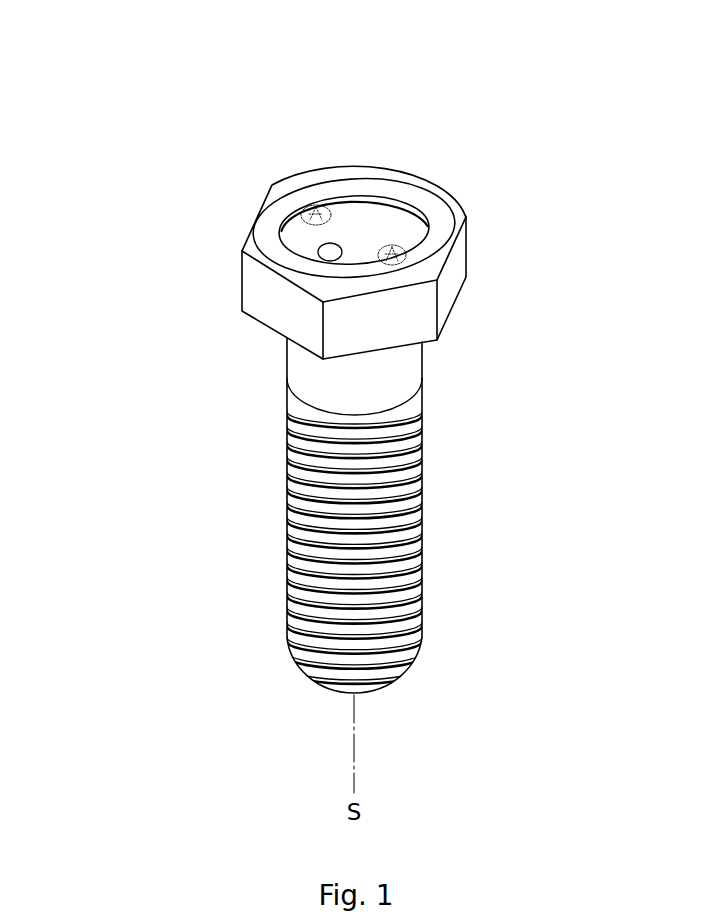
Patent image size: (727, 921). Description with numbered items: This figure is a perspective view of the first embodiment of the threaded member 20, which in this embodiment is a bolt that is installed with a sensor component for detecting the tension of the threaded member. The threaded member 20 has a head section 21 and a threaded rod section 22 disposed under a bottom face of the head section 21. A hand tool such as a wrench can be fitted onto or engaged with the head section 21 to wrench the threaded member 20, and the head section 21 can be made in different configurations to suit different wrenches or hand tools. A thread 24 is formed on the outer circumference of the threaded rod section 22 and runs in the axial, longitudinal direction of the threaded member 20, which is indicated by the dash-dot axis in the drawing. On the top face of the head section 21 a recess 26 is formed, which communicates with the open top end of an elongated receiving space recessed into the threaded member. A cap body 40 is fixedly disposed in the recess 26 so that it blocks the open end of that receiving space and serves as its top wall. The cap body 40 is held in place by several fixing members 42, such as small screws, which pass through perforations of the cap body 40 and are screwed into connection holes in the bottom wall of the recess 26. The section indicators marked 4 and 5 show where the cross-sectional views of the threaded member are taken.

The section line 4- 4 is at (470, 158).
The section line 5- 5 is at (243, 157).
The threaded member 20 is at (488, 263).
The head section 21 is at (452, 293).
The threaded rod section 22 is at (432, 533).
The thread 24 is at (302, 598).
The recess 26 is at (401, 199).
The cap body 40 is at (352, 207).
The fixing members 42 is at (325, 208).